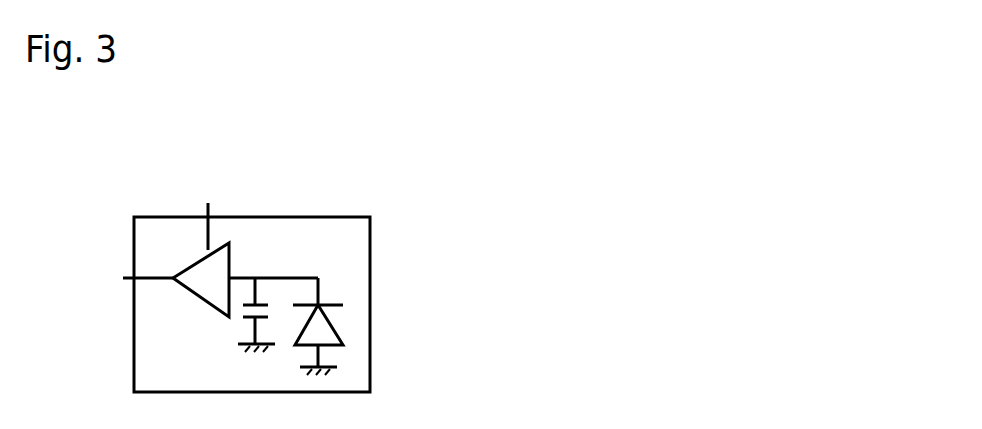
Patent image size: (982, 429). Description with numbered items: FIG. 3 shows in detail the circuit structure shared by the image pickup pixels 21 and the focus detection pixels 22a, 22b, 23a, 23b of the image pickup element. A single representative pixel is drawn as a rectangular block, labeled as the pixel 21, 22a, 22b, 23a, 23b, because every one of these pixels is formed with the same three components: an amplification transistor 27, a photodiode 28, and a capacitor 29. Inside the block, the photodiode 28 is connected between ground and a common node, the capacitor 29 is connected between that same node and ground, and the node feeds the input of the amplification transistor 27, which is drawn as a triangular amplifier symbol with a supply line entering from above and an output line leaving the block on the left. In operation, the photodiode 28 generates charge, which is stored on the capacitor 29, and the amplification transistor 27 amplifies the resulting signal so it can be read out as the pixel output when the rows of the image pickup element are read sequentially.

The amplification transistor 27 is at (217, 258).
The image pickup pixels 21 is at (400, 297).
The focus detection pixel 22a is at (400, 297).
The focus detection pixel 22b is at (400, 297).
The focus detection pixel 23a is at (400, 297).
The focus detection pixel 23b is at (355, 283).
The photodiode 28 is at (320, 337).
The capacitor 29 is at (243, 312).